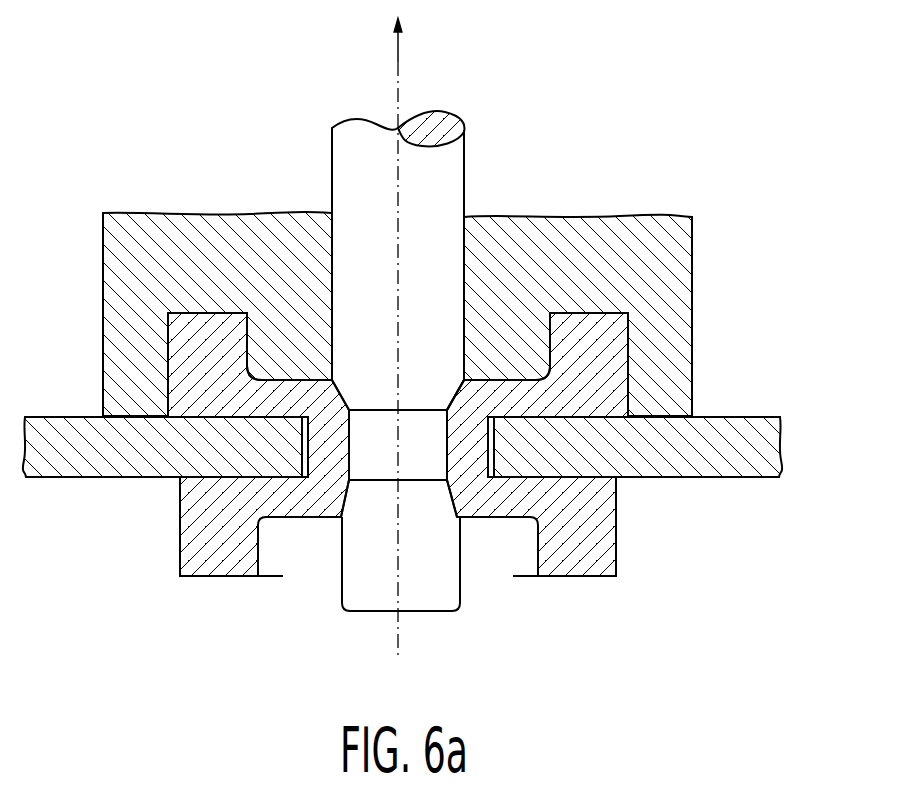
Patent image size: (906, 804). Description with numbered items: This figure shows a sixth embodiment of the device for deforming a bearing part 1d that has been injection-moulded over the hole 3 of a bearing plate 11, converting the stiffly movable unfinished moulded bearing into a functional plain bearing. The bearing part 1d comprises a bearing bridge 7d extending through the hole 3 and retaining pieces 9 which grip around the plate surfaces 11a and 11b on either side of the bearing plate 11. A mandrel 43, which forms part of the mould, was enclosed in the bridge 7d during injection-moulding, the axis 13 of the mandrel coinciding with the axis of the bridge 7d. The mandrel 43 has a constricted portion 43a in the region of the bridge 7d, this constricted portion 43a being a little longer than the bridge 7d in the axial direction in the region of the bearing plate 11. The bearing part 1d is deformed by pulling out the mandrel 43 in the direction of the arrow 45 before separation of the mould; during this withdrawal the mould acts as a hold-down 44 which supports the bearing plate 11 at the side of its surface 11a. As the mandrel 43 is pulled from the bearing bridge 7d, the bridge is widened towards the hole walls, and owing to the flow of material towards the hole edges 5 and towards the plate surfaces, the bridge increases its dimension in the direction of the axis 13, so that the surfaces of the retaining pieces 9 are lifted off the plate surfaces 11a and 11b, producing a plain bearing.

The bearing part 1d is at (640, 297).
The hold-down 44 is at (683, 293).
The retaining pieces 9 is at (212, 347).
The hole edges 5 is at (327, 517).
The hole 3 is at (488, 518).
The bearing bridge 7d is at (473, 442).
The constricted portion 43a is at (355, 438).
The bearing plate 11 is at (756, 421).
The plate surface 11a is at (53, 410).
The plate surface 11b is at (63, 486).
The axis 13 is at (398, 183).
The mandrel 43 is at (453, 180).
The arrow 45 is at (396, 58).